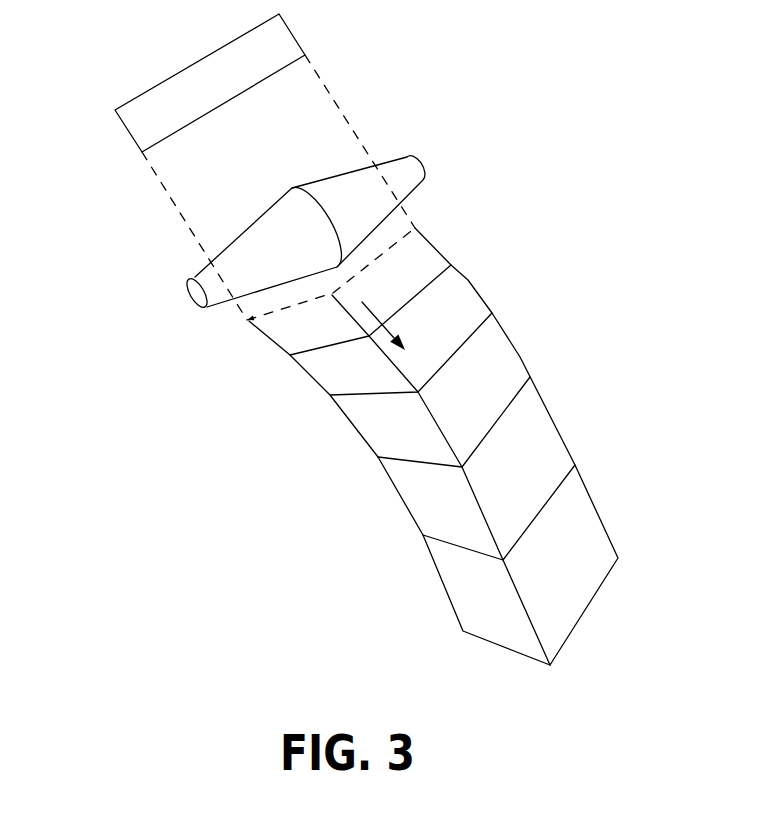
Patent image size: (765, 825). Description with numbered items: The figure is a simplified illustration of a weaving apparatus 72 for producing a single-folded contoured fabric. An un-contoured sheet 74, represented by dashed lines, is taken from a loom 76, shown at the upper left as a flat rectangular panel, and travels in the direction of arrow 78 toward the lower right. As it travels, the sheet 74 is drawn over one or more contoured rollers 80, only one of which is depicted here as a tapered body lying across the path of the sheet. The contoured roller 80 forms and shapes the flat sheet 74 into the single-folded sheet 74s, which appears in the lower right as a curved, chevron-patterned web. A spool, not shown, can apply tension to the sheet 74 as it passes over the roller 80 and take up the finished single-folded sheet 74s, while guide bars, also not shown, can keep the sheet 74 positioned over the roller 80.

The weaving apparatus 72 is at (100, 222).
The un-contoured sheet 74 is at (325, 137).
The single-folded sheet 74s is at (577, 513).
The loom 76 is at (183, 105).
The arrow 78 is at (370, 313).
The contoured roller 80 is at (420, 170).